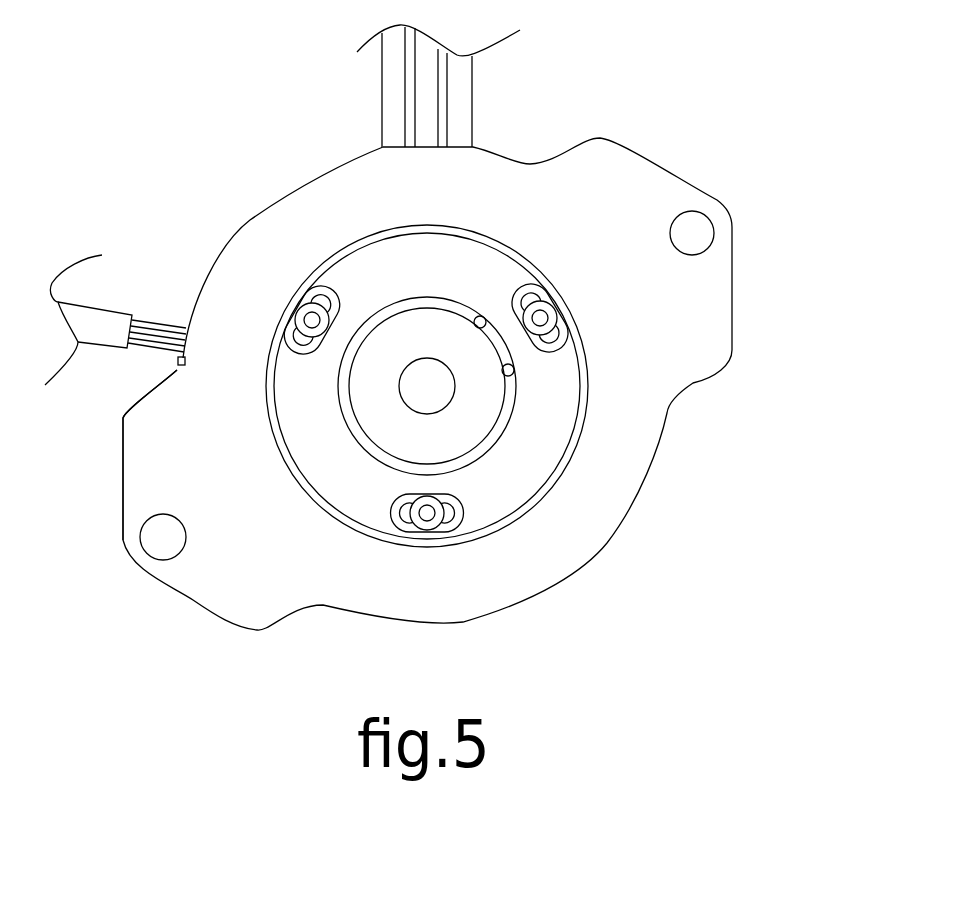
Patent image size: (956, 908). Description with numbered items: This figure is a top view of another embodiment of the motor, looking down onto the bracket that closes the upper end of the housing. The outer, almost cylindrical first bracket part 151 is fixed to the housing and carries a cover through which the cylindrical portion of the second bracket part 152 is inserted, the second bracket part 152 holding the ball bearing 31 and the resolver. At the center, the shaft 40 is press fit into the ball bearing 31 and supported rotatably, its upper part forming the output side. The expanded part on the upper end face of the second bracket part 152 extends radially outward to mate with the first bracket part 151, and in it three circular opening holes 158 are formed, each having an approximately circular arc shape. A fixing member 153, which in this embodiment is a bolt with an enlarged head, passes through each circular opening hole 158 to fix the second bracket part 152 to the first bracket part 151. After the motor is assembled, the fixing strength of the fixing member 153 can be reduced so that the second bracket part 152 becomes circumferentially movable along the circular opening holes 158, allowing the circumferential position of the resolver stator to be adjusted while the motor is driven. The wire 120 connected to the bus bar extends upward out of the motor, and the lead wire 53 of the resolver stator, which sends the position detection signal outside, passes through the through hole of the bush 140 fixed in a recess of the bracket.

The wire 120 is at (462, 97).
The first bracket part 151 is at (578, 232).
The second bracket part 152 is at (390, 267).
The fixing member 153 is at (312, 320).
The circular opening hole 158 is at (300, 338).
The ball bearing 31 is at (493, 387).
The shaft 40 is at (428, 387).
The lead wire 53 is at (102, 328).
The bush 140 is at (182, 360).